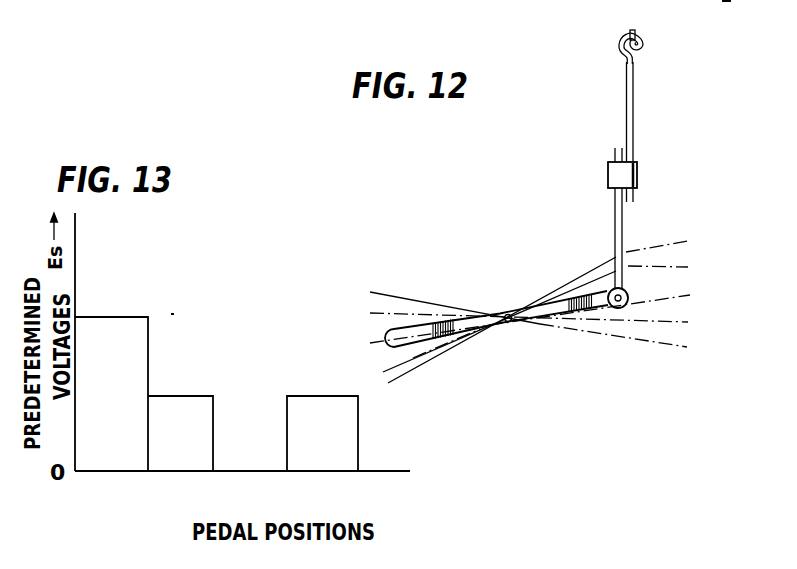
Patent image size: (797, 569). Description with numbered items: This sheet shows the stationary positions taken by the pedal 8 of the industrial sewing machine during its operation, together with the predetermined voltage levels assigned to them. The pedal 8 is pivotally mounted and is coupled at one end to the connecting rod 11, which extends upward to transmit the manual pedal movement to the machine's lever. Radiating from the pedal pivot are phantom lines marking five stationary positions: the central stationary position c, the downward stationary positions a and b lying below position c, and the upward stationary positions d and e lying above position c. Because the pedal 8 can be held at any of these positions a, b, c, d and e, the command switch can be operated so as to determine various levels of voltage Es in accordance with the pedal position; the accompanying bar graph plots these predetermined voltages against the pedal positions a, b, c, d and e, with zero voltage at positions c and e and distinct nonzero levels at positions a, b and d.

In FIG. 12, the pedal 8 is at (512, 313).
In FIG. 12, the connecting rod 11 is at (622, 120).
In FIG. 12, the stationary position a is at (645, 346).
In FIG. 13, the stationary position a is at (111, 416).
In FIG. 12, the stationary position b is at (647, 323).
In FIG. 13, the stationary position b is at (180, 455).
In FIG. 12, the stationary position c is at (647, 296).
In FIG. 13, the stationary position c is at (250, 493).
In FIG. 12, the stationary position d is at (631, 268).
In FIG. 13, the stationary position d is at (322, 455).
In FIG. 12, the stationary position e is at (628, 254).
In FIG. 13, the stationary position e is at (384, 493).